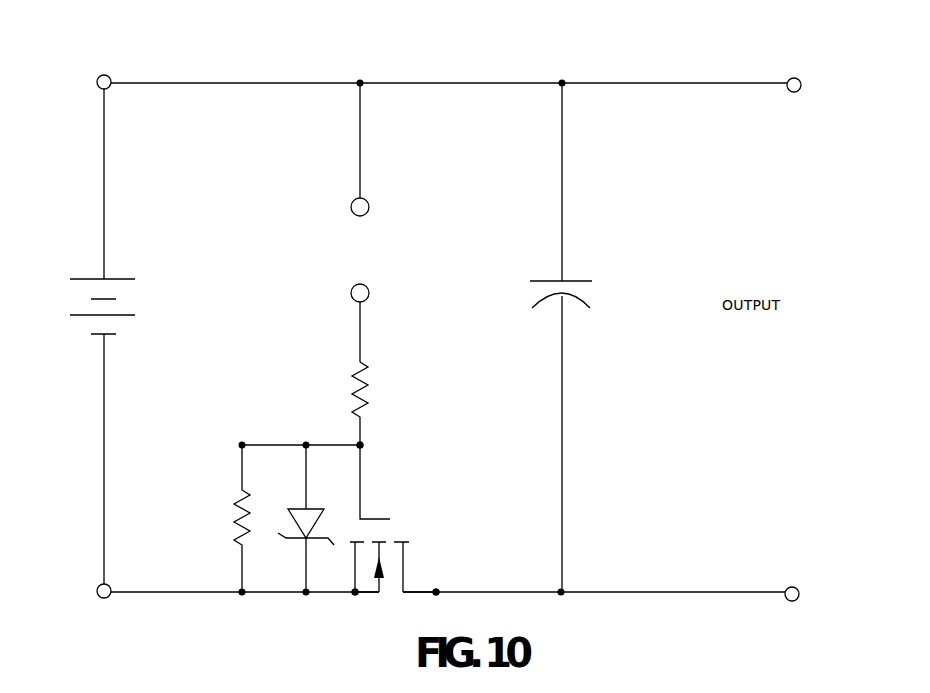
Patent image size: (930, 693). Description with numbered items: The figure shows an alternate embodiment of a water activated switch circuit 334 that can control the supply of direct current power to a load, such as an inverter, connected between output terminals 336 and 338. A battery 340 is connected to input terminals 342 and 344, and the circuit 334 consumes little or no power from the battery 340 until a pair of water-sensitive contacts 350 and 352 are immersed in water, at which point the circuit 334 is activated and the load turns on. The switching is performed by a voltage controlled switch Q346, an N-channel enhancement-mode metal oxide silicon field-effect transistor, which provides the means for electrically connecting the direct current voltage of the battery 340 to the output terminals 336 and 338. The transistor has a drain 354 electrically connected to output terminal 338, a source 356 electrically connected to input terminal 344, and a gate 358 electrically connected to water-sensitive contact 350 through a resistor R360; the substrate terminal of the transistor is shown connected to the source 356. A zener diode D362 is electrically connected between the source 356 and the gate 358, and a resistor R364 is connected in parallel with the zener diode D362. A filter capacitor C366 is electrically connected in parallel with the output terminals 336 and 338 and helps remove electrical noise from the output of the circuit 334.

The water activated switch circuit 334 is at (581, 58).
The output terminal 336 is at (787, 80).
The output terminal 338 is at (784, 600).
The battery 340 is at (118, 305).
The input terminal 342 is at (110, 76).
The input terminal 344 is at (110, 585).
The water-sensitive contact 350 is at (368, 288).
The water-sensitive contact 352 is at (360, 158).
The drain 354 is at (434, 595).
The source 356 is at (352, 595).
The gate 358 is at (362, 447).
The resistor R360 is at (337, 403).
The zener diode D362 is at (293, 518).
The resistor R364 is at (220, 518).
The filter capacitor C366 is at (544, 337).
The voltage controlled switch Q346 is at (401, 518).